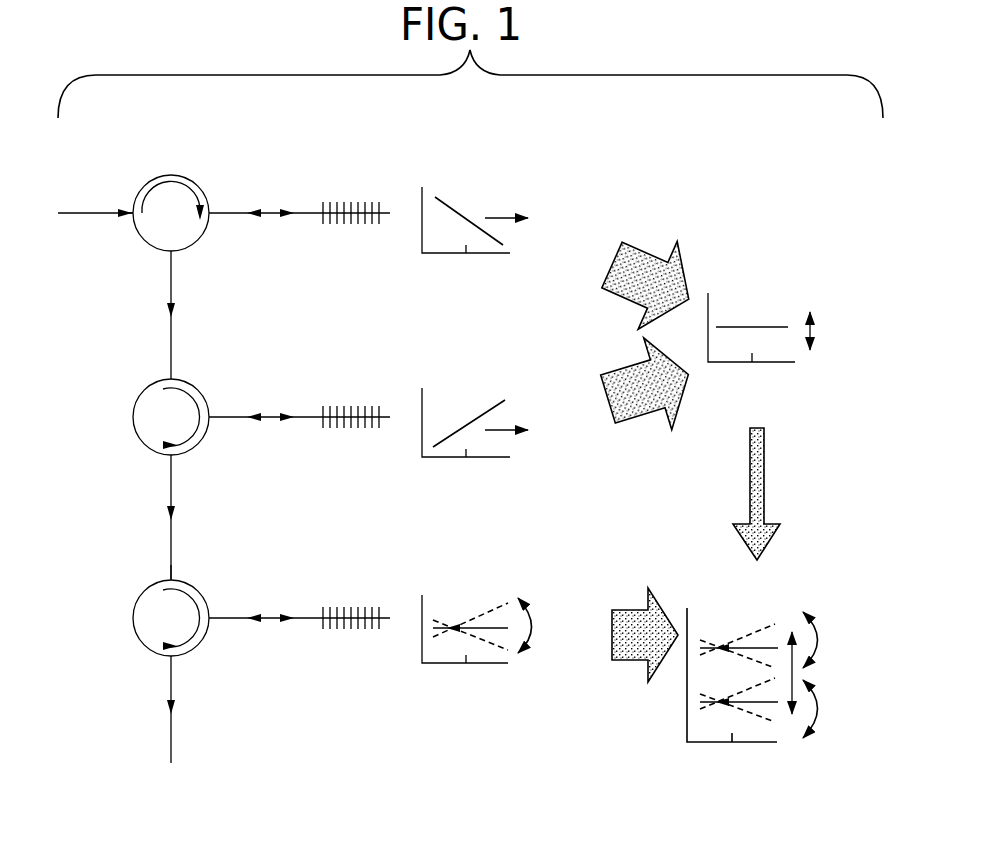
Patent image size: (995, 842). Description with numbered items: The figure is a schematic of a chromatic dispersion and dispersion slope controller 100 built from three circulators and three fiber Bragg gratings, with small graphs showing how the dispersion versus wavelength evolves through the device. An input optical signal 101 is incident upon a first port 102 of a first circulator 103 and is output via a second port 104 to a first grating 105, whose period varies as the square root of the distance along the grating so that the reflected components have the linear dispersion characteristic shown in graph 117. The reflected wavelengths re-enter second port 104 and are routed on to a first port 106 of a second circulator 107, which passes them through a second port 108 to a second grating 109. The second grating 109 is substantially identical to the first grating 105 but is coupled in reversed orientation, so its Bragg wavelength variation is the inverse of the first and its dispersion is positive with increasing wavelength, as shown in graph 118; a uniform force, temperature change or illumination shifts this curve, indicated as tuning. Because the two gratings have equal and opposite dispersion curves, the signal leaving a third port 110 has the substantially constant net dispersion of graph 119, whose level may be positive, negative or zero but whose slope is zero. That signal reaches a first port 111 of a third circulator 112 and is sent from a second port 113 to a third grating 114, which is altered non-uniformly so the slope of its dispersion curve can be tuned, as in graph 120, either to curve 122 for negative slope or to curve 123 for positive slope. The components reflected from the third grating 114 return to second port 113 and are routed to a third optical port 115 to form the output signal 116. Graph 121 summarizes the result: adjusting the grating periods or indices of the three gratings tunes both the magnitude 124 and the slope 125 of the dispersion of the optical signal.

The chromatic dispersion and dispersion slope controller 100 is at (110, 123).
The input optical signal 101 is at (93, 218).
The first port 102 is at (132, 211).
The first circulator 103 is at (200, 188).
The second port 104 is at (209, 222).
The first grating 105 is at (352, 195).
The first port 106 is at (173, 252).
The second circulator 107 is at (196, 393).
The second port 108 is at (212, 416).
The second grating 109 is at (352, 400).
The third port 110 is at (174, 455).
The first port 111 is at (176, 580).
The third circulator 112 is at (200, 594).
The second port 113 is at (210, 625).
The third grating 114 is at (348, 632).
The third optical port 115 is at (176, 658).
The output signal 116 is at (168, 682).
The graph 117 is at (457, 157).
The graph 118 is at (452, 361).
The graph 119 is at (750, 263).
The graph 120 is at (458, 563).
The graph 121 is at (775, 586).
The curve 122 is at (474, 636).
The curve 123 is at (495, 605).
The magnitude 124 is at (800, 683).
The slope 125 is at (822, 640).